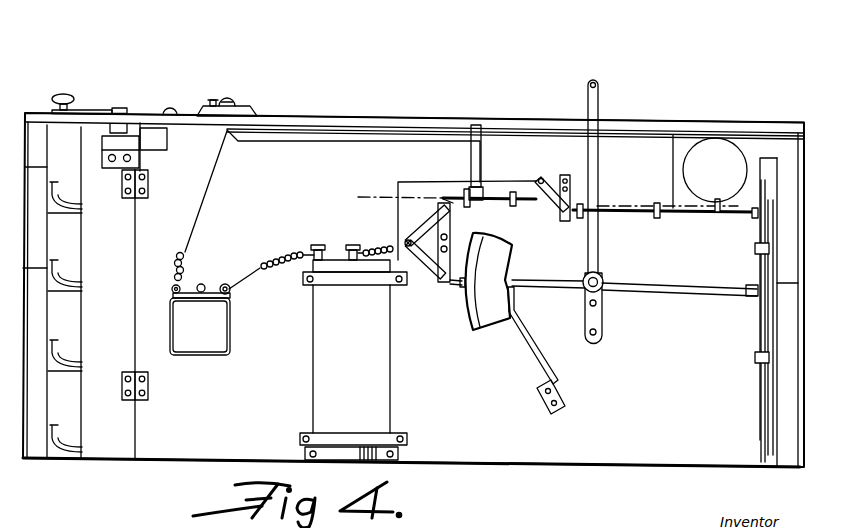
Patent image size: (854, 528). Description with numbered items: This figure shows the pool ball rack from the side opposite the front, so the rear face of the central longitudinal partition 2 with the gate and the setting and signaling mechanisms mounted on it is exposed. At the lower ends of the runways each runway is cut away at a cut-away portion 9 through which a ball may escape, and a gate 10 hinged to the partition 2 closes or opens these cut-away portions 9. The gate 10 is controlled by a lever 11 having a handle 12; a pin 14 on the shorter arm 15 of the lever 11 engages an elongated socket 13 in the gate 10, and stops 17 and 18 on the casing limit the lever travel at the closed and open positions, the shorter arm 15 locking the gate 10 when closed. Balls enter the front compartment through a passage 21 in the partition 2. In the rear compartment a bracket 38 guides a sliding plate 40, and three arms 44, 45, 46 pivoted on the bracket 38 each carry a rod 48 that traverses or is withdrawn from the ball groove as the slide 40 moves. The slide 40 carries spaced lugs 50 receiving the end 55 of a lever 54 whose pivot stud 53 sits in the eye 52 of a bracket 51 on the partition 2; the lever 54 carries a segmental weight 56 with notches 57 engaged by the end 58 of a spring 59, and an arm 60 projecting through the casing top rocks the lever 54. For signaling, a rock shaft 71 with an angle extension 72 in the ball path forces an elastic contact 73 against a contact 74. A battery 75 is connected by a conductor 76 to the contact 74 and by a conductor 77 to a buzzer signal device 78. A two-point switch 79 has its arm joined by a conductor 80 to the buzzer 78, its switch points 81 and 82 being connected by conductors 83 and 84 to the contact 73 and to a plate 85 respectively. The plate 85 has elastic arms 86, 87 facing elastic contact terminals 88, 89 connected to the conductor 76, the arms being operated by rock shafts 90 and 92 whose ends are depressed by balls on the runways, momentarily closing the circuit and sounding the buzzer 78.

The central longitudinal partition 2 is at (413, 266).
The cut-away portion 9 is at (83, 206).
The gate 10 is at (115, 290).
The lever 11 is at (89, 86).
The handle 12 is at (414, 71).
The elongated socket 13 is at (162, 264).
The pin 14 is at (93, 154).
The shorter arm 15 is at (144, 68).
The stop 17 is at (53, 95).
The stop 18 is at (215, 57).
The passage 21 is at (710, 148).
The bracket 38 is at (771, 420).
The sliding plate 40 is at (760, 392).
The arm 44 is at (679, 275).
The arm 45 is at (700, 402).
The arm 46 is at (720, 456).
The rod 48 is at (729, 305).
The spaced lugs 50 is at (755, 284).
The bracket 51 is at (600, 322).
The eye 52 is at (653, 251).
The pivot stud 53 is at (616, 258).
The lever 54 is at (674, 329).
The end of lever 55 is at (729, 327).
The segmental weight 56 is at (522, 277).
The notches 57 is at (548, 271).
The spring end 58 is at (541, 335).
The spring 59 is at (548, 368).
The arm 60 is at (598, 104).
The rock shaft 71 is at (549, 193).
The angle extension 72 is at (754, 150).
The elastic contact 73 is at (601, 185).
The contact 74 is at (536, 181).
The battery 75 is at (335, 352).
The conductor 76 is at (398, 193).
The conductor 77 is at (311, 262).
The signal device 78 is at (228, 320).
The switch 79 is at (515, 107).
The conductor 80 is at (219, 206).
The switch point 81 is at (215, 75).
The switch point 82 is at (235, 87).
The conductor 83 is at (515, 110).
The conductor 84 is at (353, 166).
The plate 85 is at (501, 227).
The elastic arm 86 is at (437, 200).
The elastic arm 87 is at (427, 283).
The elastic contact terminal 88 is at (406, 242).
The elastic contact terminal 89 is at (403, 316).
The rock shaft 90 is at (474, 141).
The rock shaft 92 is at (458, 290).